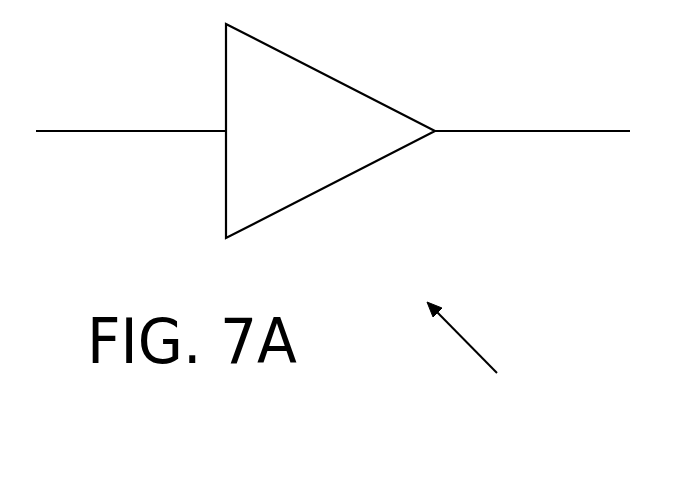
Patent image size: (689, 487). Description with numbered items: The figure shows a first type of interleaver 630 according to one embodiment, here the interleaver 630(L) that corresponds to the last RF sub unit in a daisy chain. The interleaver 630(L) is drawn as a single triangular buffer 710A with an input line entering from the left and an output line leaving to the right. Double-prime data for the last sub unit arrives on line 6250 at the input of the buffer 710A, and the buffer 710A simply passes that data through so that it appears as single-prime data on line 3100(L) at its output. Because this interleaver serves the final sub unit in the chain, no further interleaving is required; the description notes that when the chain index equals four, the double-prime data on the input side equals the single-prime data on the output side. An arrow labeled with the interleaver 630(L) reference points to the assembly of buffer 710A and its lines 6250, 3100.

The line 6250 is at (131, 136).
The buffer 710A is at (330, 151).
The line 3100 is at (532, 138).
The interleaver 630 is at (492, 337).